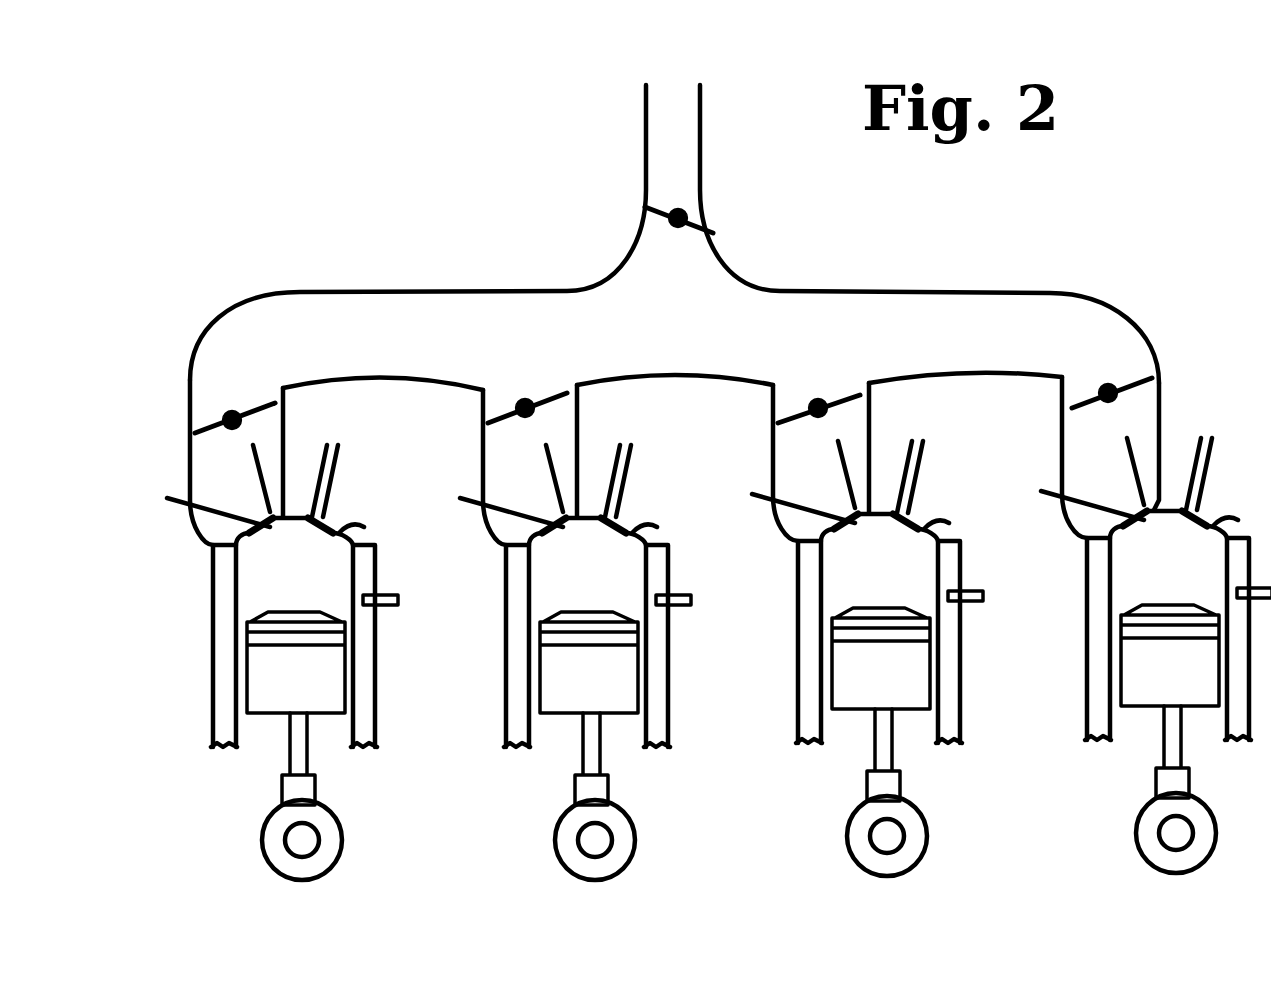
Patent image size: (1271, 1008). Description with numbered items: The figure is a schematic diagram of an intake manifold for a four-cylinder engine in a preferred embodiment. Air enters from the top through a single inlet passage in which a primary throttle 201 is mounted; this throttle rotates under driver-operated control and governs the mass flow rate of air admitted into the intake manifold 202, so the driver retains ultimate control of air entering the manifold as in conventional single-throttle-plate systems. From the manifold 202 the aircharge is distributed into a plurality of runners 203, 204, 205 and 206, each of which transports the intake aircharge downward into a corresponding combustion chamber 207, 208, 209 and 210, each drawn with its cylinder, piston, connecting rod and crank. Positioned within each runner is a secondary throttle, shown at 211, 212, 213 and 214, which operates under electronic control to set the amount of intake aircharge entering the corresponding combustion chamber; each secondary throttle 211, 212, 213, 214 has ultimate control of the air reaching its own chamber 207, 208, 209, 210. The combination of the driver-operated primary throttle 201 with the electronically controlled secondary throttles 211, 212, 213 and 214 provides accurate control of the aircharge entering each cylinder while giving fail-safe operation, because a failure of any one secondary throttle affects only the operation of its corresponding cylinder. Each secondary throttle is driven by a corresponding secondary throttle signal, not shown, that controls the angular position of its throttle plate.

The primary throttle 201 is at (648, 205).
The intake manifold 202 is at (642, 334).
The runner 203 is at (228, 384).
The runner 204 is at (518, 366).
The runner 205 is at (820, 363).
The runner 206 is at (1100, 354).
The combustion chamber 207 is at (282, 662).
The combustion chamber 208 is at (557, 586).
The combustion chamber 209 is at (867, 658).
The combustion chamber 210 is at (1141, 577).
The secondary throttle 211 is at (208, 423).
The secondary throttle 212 is at (500, 415).
The secondary throttle 213 is at (795, 413).
The secondary throttle 214 is at (1078, 396).